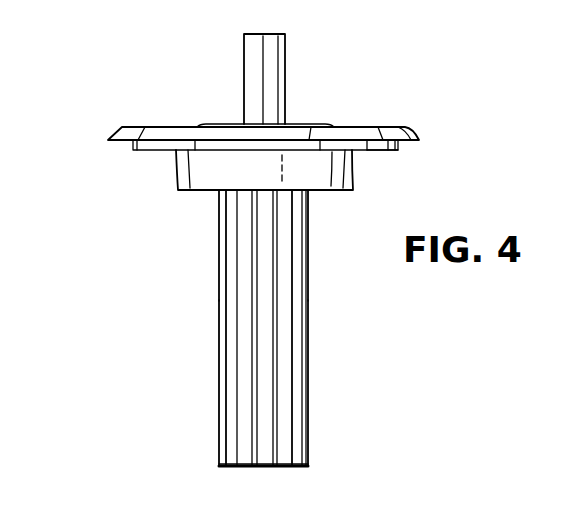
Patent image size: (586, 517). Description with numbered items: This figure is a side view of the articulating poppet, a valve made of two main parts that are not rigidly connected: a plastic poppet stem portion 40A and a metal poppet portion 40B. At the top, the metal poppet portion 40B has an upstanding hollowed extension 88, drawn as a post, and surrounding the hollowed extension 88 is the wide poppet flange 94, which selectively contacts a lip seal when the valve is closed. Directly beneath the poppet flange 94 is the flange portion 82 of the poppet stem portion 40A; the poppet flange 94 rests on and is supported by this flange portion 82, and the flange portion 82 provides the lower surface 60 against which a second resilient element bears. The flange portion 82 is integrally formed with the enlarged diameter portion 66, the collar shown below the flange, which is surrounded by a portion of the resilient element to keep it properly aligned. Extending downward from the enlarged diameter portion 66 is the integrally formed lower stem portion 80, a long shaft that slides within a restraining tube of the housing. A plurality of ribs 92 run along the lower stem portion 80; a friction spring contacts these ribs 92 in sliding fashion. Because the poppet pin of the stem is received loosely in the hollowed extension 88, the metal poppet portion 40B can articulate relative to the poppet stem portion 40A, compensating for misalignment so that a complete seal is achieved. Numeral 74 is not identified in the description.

The hollowed extension 88 is at (275, 71).
The metal poppet portion 40B is at (398, 118).
The poppet flange 94 is at (133, 132).
The flange portion 82 is at (128, 150).
The lower surface 60 is at (375, 150).
The enlarged diameter portion 66 is at (195, 178).
The shaft 74 is at (228, 391).
The ribs 92 is at (222, 315).
The lower stem portion 80 is at (262, 438).
The plastic poppet stem portion 40A is at (327, 362).